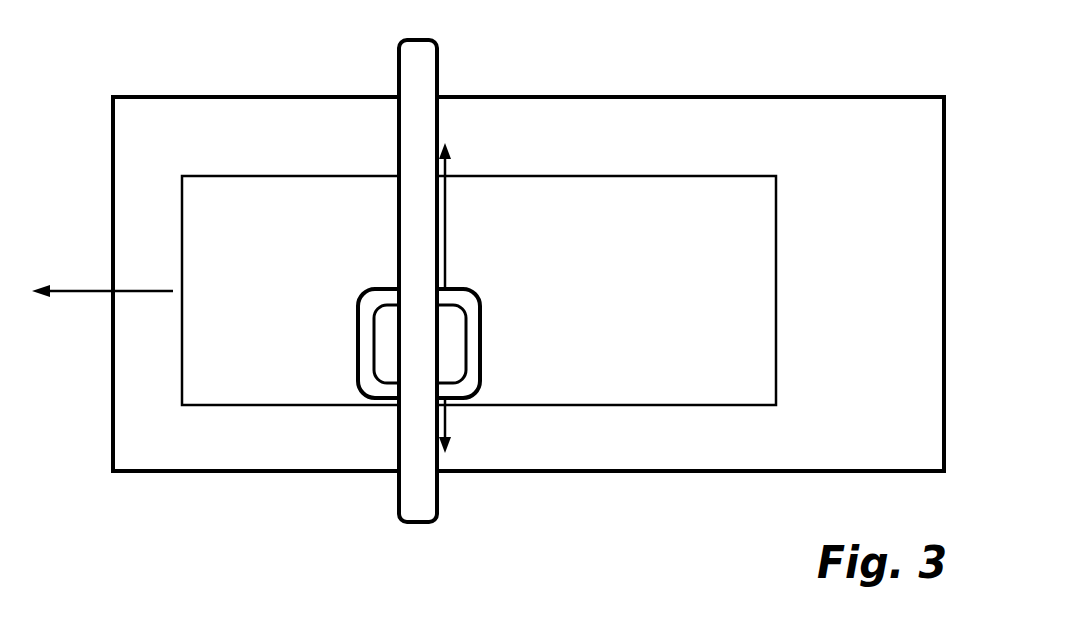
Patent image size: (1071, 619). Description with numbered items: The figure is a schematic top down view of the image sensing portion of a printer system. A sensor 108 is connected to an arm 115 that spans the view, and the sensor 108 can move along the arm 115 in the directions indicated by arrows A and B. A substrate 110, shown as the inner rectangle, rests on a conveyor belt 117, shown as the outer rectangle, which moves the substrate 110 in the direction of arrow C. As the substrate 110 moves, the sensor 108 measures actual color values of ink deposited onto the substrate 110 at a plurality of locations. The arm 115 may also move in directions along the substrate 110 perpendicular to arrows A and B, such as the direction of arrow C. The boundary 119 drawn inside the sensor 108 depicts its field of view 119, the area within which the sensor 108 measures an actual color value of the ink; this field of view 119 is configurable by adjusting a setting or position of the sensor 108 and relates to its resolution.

The sensor 108 is at (468, 347).
The substrate 110 is at (235, 407).
The arm 115 is at (437, 68).
The conveyor belt 117 is at (555, 474).
The field of view 119 is at (358, 327).